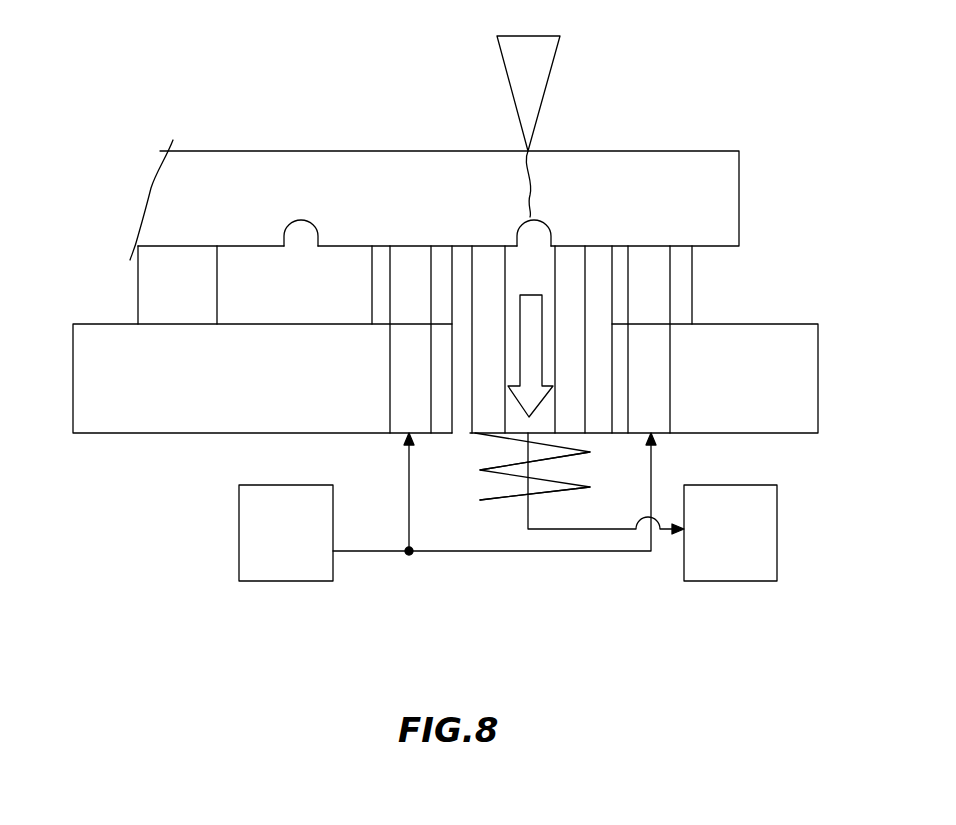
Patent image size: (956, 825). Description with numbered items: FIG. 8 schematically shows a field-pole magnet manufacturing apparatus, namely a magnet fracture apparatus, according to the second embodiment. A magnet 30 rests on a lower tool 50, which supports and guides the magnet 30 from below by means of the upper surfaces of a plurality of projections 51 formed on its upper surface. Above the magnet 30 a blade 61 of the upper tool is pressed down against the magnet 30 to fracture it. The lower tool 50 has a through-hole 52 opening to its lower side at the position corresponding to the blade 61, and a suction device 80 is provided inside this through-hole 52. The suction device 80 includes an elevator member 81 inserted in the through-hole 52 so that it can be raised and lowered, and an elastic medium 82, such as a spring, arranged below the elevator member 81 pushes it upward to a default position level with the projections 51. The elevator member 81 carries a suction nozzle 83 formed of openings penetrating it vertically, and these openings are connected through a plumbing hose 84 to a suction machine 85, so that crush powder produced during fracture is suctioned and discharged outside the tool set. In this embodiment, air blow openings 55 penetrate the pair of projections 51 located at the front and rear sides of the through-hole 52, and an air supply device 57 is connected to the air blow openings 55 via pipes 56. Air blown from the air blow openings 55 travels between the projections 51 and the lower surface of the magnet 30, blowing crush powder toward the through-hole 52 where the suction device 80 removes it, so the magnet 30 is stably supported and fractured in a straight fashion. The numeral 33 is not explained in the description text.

The magnet 30 is at (242, 170).
The protrusion 33 is at (302, 233).
The blade 61 is at (545, 47).
The lower tool 50 is at (793, 324).
The projections 51 is at (202, 295).
The air blow openings 55 is at (410, 270).
The suction nozzle 83 is at (538, 263).
The through-hole 52 is at (614, 372).
The suction device 80 is at (468, 446).
The elevator member 81 is at (575, 422).
The elastic medium 82 is at (507, 505).
The plumbing hose 84 is at (590, 532).
The suction machine 85 is at (730, 533).
The air supply device 57 is at (286, 533).
The pipes 56 is at (484, 562).